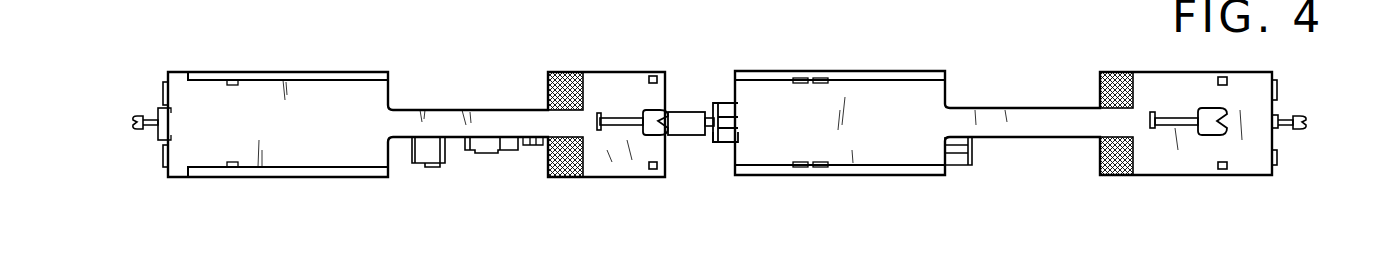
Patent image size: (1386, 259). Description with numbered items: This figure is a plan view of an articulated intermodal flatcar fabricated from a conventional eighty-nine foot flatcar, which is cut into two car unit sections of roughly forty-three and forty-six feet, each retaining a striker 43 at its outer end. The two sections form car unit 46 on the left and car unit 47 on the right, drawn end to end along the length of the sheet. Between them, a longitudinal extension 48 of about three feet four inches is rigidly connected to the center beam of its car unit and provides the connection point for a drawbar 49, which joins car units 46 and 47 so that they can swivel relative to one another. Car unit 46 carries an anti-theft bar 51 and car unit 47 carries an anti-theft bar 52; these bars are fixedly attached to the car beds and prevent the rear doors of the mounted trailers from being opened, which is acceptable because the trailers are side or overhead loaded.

The strikers 43 is at (157, 128).
The car unit 46 is at (349, 66).
The car unit 47 is at (866, 68).
The longitudinal extension 48 is at (683, 120).
The drawbar 49 is at (726, 118).
The anti-theft bar 51 is at (158, 110).
The anti-theft bar 52 is at (725, 143).